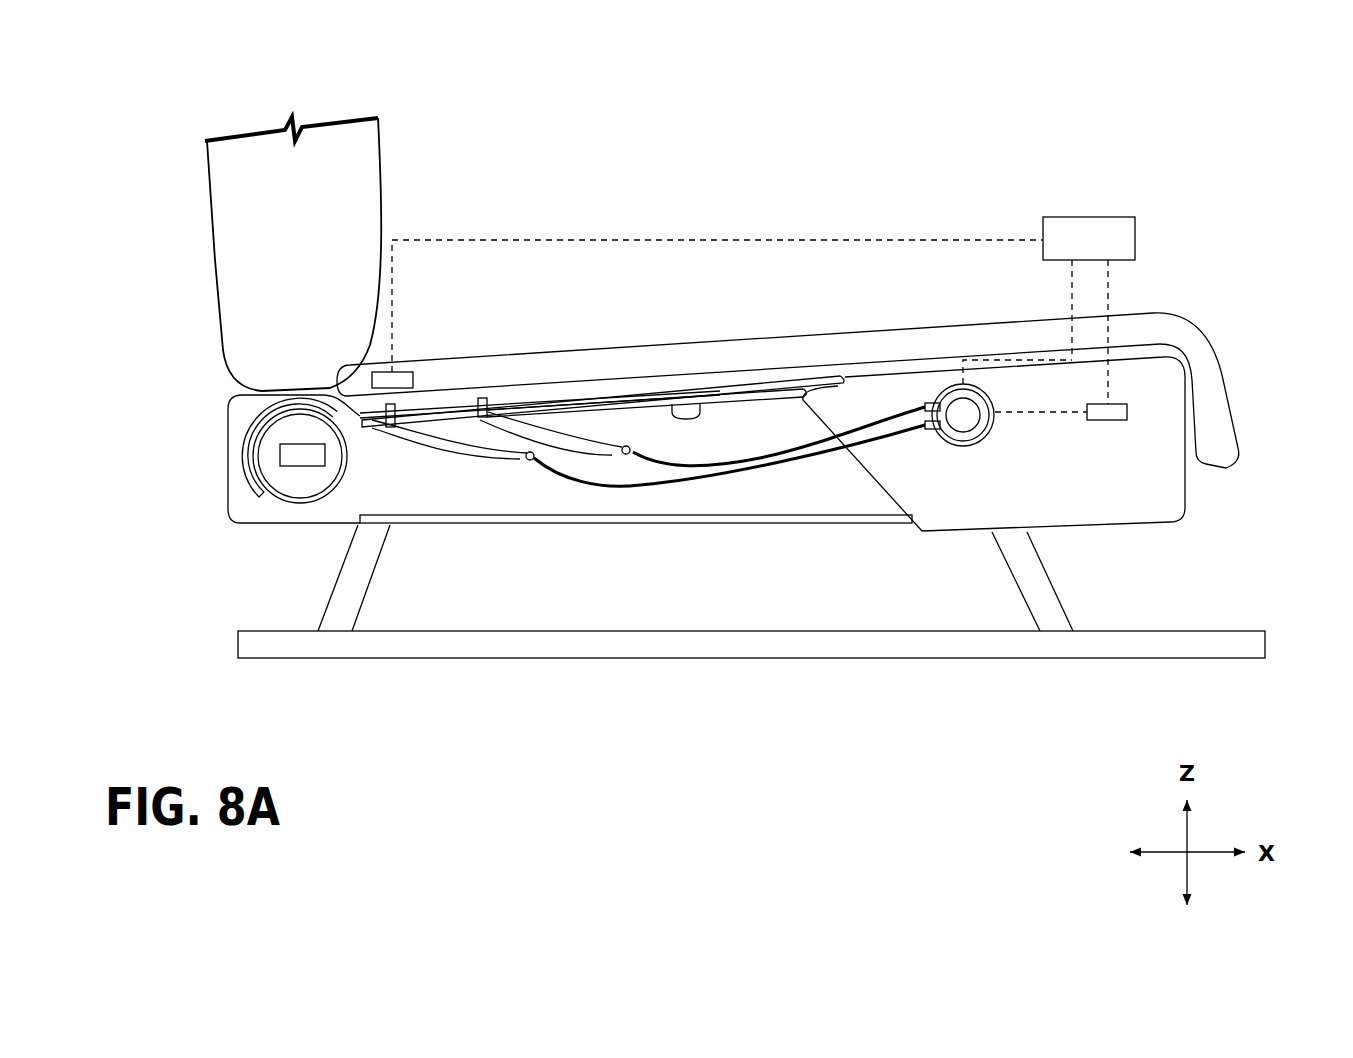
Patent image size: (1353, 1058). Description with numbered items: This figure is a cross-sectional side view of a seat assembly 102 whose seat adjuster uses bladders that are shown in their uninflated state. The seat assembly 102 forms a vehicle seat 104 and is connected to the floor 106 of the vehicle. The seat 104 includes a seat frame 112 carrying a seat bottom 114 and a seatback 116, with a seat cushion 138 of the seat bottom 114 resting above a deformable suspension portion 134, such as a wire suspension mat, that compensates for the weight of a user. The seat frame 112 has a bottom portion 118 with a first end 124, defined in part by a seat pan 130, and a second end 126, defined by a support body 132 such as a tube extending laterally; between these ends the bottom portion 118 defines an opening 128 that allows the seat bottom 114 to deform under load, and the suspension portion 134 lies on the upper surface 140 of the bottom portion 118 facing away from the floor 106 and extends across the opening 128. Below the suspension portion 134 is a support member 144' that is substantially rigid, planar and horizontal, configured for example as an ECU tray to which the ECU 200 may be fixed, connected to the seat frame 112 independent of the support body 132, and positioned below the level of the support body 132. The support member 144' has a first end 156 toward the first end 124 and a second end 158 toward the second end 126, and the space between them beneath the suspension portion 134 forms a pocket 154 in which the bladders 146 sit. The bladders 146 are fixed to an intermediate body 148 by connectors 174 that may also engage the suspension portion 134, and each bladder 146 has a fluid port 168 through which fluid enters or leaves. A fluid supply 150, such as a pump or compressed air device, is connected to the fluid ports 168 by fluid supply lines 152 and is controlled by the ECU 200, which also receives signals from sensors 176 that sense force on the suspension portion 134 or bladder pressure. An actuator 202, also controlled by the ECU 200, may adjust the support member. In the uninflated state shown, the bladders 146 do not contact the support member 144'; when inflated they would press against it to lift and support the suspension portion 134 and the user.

The seat assembly 102 is at (1064, 142).
The seat 104 is at (367, 96).
The floor 106 is at (243, 630).
The seat frame 112 is at (1063, 585).
The seat bottom 114 is at (230, 418).
The seatback 116 is at (217, 186).
The bottom portion 118 is at (1060, 535).
The first end 124 is at (1193, 486).
The second end 126 is at (266, 527).
The opening 128 is at (801, 416).
The seat pan 130 is at (1153, 526).
The support body 132 is at (280, 453).
The suspension portion 134 is at (552, 396).
The seat cushion 138 is at (1220, 438).
The upper surface 140 is at (1143, 350).
The support member 144' is at (636, 629).
The bladders 146 is at (398, 413).
The intermediate body 148 is at (697, 408).
The fluid supply 150 is at (966, 462).
The fluid supply lines 152 is at (877, 430).
The pocket 154 is at (497, 482).
The first end 156 is at (836, 370).
The second end 158 is at (382, 484).
The fluid ports 168 is at (621, 454).
The connectors 174 is at (447, 430).
The sensors 176 is at (382, 371).
The ECU 200 is at (1105, 217).
The actuator 202 is at (258, 470).